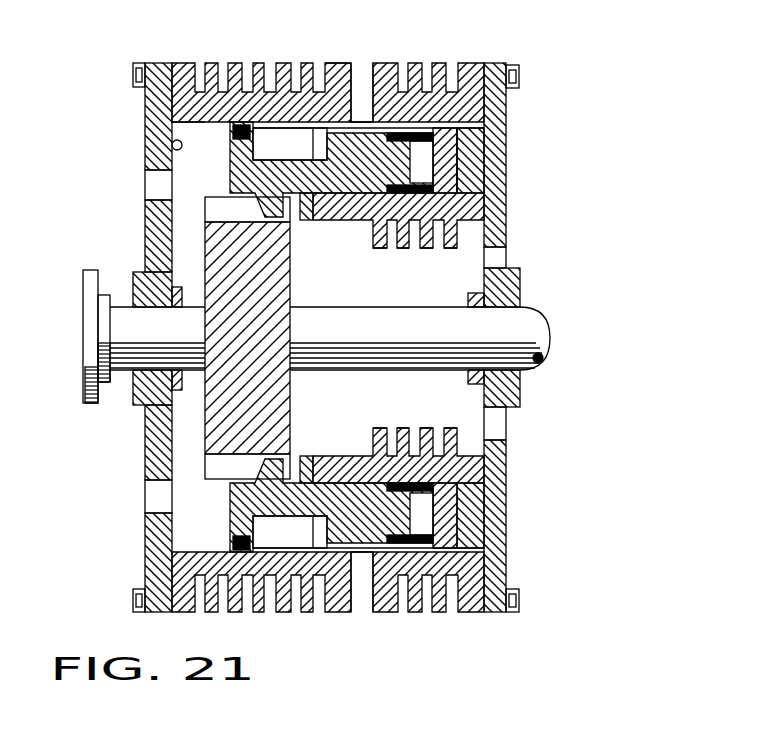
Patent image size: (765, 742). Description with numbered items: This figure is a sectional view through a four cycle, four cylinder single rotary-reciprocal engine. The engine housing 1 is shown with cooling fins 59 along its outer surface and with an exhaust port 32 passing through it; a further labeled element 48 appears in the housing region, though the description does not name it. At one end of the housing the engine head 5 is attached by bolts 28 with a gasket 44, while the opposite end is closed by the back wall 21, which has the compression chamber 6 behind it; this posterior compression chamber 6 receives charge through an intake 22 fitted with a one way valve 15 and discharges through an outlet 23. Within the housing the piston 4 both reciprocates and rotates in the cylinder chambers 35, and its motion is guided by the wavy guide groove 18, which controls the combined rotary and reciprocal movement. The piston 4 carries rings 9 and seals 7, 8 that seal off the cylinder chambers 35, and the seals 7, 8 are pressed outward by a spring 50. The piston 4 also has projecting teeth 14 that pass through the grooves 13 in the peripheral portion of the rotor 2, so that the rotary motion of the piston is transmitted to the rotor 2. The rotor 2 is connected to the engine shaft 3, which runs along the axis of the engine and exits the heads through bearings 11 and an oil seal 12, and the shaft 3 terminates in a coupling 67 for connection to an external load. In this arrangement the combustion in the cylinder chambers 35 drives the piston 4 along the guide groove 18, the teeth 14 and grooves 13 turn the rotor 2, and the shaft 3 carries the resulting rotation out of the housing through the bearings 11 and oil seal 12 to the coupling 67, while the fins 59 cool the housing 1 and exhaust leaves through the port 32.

The engine housing 1 is at (265, 110).
The rotor 2 is at (220, 334).
The engine shaft 3 is at (133, 323).
The piston 4 is at (330, 63).
The engine head 5 is at (519, 77).
The compression chamber 6 is at (197, 137).
The seal 7 is at (460, 115).
The seal 8 is at (465, 157).
The rings 9 is at (240, 126).
The bearings 11 is at (133, 392).
The oil seal 12 is at (140, 278).
The groove 13 is at (225, 190).
The projecting teeth 14 is at (273, 213).
The one way valve 15 is at (183, 218).
The wavy groove 18 is at (295, 153).
The posterior wall 21 is at (137, 65).
The intake 22 is at (155, 203).
The outlet 23 is at (160, 503).
The bolts 28 is at (518, 65).
The exhaust port 32 is at (362, 93).
The cylinder chambers 35 is at (462, 140).
The gasket 44 is at (172, 65).
The stator core 48 is at (507, 457).
The spring 50 is at (473, 183).
The cooling fins 59 is at (450, 63).
The coupling 67 is at (92, 310).